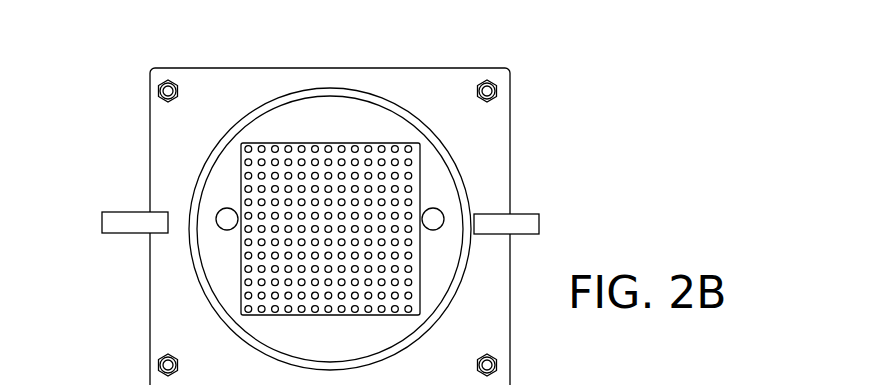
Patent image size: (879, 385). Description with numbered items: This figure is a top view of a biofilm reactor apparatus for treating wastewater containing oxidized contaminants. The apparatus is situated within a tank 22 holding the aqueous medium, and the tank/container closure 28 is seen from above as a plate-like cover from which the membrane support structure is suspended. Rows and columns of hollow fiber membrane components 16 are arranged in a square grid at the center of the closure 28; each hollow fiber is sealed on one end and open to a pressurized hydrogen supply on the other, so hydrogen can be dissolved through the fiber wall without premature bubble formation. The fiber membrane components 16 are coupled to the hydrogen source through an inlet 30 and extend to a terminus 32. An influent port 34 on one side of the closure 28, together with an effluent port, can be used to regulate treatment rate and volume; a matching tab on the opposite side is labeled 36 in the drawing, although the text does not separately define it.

The fiber membrane components 16 is at (412, 158).
The tank 22 is at (202, 293).
The tank/container closure 28 is at (440, 83).
The inlet 30 is at (440, 216).
The terminus 32 is at (58, 373).
The influent port 34 is at (113, 224).
The right tab 36 is at (527, 226).